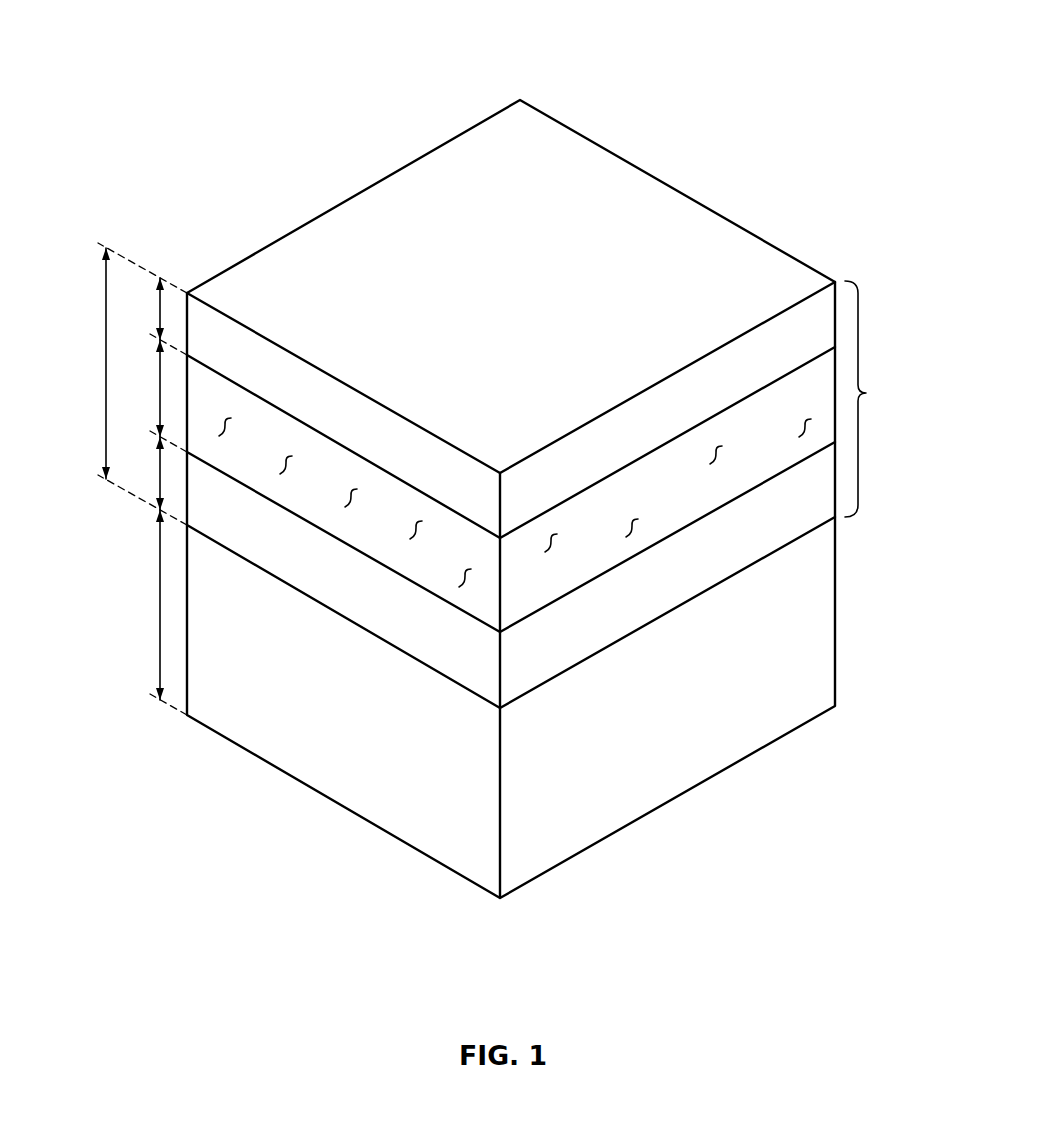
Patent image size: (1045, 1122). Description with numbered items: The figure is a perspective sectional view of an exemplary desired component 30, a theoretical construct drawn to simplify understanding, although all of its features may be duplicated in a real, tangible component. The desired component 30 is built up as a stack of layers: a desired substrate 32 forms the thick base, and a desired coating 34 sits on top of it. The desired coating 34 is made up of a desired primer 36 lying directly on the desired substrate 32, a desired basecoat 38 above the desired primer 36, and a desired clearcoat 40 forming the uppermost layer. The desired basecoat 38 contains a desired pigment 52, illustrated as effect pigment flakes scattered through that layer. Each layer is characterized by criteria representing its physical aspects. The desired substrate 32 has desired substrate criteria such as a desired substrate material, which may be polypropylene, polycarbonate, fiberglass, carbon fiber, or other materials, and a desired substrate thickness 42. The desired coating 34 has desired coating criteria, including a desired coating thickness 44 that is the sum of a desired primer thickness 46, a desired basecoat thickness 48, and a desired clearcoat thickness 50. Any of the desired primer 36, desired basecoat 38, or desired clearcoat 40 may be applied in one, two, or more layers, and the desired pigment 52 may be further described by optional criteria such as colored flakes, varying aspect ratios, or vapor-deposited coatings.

The desired component 30 is at (193, 38).
The desired substrate 32 is at (578, 787).
The desired coating 34 is at (866, 393).
The desired primer 36 is at (643, 580).
The desired basecoat 38 is at (747, 419).
The desired clearcoat 40 is at (680, 400).
The desired substrate thickness 42 is at (160, 610).
The desired coating thickness 44 is at (106, 333).
The desired primer thickness 46 is at (160, 472).
The desired basecoat thickness 48 is at (160, 392).
The desired clearcoat thickness 50 is at (160, 310).
The desired pigment 52 is at (350, 497).